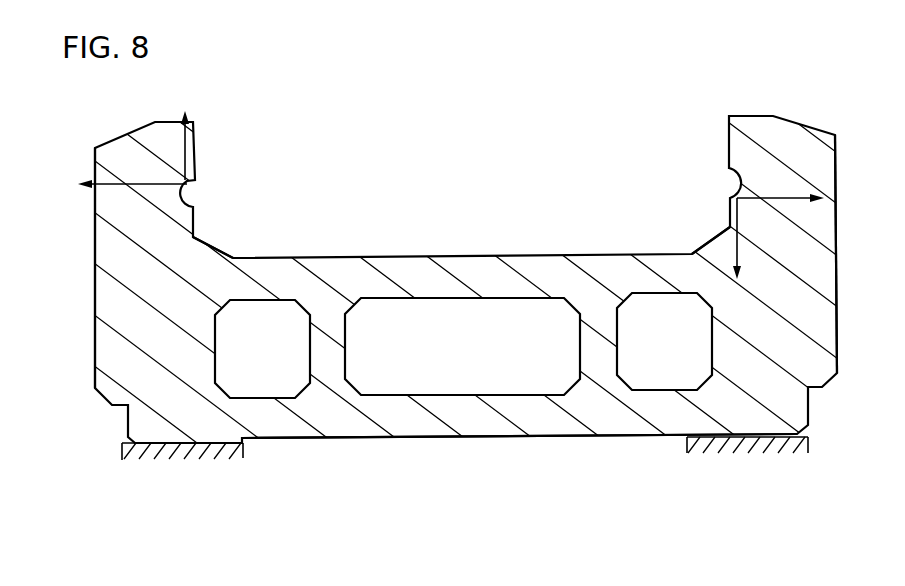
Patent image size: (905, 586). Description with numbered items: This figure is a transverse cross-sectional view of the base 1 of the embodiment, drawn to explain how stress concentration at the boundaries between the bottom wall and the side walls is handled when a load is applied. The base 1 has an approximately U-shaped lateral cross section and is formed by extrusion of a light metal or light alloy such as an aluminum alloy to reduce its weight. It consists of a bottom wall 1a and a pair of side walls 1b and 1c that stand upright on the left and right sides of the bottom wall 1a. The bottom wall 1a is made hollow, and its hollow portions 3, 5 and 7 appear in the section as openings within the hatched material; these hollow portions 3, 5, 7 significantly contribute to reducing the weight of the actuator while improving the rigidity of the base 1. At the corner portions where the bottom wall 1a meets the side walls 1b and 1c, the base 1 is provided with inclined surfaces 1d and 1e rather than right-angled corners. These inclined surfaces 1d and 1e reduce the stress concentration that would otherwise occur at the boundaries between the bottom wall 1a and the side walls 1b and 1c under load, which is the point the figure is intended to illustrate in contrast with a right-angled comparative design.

The base 1 is at (457, 435).
The bottom wall 1a is at (325, 437).
The side wall 1b is at (99, 286).
The side wall 1c is at (831, 282).
The inclined surface 1d is at (223, 248).
The inclined surface 1e is at (715, 236).
The hollow portion 3 is at (272, 382).
The hollow portion 5 is at (535, 380).
The hollow portion 7 is at (688, 380).